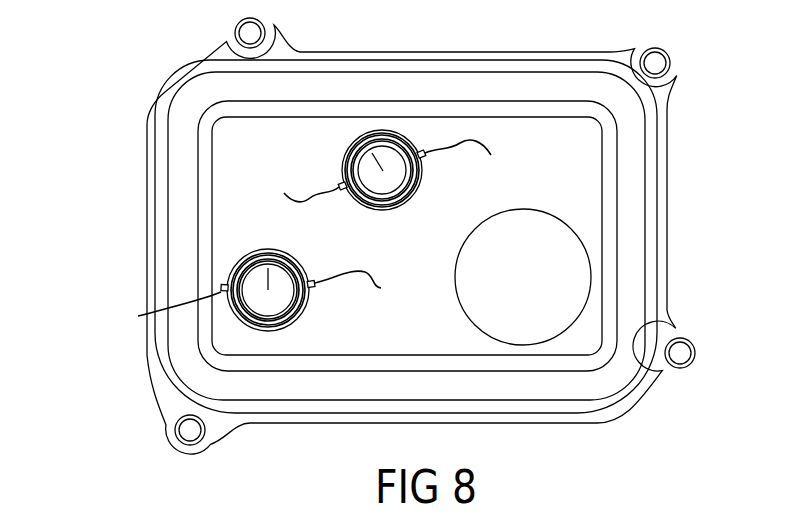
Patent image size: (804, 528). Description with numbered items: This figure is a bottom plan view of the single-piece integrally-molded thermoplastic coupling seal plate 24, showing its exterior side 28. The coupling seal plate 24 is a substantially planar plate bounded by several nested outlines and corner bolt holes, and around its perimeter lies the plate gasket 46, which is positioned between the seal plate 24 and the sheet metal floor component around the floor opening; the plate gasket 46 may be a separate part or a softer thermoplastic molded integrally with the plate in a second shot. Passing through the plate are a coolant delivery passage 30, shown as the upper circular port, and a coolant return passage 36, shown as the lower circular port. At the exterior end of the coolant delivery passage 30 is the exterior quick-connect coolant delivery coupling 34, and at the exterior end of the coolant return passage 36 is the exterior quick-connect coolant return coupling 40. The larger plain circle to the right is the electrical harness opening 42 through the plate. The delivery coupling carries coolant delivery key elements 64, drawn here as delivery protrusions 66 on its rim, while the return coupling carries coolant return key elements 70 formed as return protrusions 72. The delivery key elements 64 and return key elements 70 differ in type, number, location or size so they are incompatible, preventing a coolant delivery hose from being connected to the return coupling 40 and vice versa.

The single-piece integrally-molded thermoplastic coupling seal plate 24 is at (113, 91).
The exterior side 28 is at (288, 156).
The coolant delivery passage 30 is at (366, 144).
The exterior quick-connect coolant delivery coupling 34 is at (400, 206).
The coolant return passage 36 is at (270, 262).
The exterior quick-connect coolant return coupling 40 is at (300, 317).
The electrical harness opening 42 is at (542, 282).
The plate gasket 46 is at (517, 388).
The coolant delivery key elements 64 is at (388, 171).
The delivery protrusions 66 is at (340, 187).
The coolant return key elements 70 is at (259, 300).
The return protrusions 72 is at (222, 292).